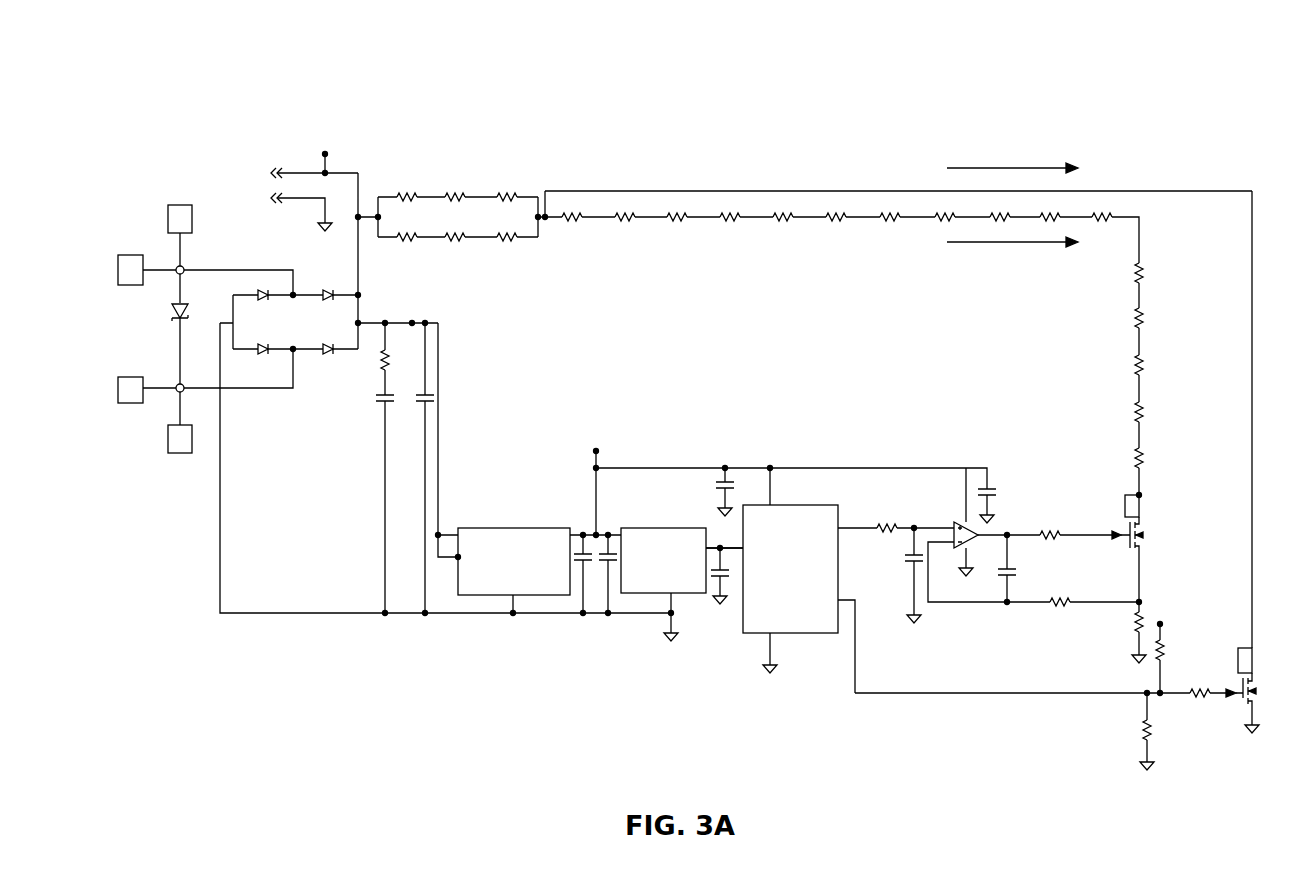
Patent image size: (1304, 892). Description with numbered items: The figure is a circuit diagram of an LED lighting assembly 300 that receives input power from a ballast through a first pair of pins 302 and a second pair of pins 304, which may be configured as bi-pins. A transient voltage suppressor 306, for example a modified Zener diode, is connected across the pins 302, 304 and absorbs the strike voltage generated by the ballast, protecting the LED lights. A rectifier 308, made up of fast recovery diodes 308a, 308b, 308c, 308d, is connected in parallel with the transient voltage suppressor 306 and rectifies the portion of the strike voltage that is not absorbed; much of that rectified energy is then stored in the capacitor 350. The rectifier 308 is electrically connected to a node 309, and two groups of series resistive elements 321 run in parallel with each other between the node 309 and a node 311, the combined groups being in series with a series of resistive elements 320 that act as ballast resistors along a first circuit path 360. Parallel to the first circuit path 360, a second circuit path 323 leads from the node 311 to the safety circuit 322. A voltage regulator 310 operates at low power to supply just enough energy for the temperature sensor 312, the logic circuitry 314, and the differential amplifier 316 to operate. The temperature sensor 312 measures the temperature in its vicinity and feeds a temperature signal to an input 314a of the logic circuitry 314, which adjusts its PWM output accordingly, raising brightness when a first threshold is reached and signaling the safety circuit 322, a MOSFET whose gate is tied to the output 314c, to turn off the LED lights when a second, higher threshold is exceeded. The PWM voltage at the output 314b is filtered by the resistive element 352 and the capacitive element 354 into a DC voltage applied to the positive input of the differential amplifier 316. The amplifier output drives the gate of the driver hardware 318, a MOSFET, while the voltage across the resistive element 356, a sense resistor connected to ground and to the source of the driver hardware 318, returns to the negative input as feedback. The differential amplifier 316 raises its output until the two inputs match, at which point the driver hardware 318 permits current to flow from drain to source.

The LED lighting assembly 300 is at (689, 430).
The first pair of pins 302 is at (131, 255).
The second pair of pins 304 is at (168, 211).
The transient voltage suppressor 306 is at (172, 313).
The rectifier 308 is at (327, 339).
The fast recovery diode 308a is at (262, 291).
The fast recovery diode 308b is at (328, 300).
The fast recovery diode 308c is at (265, 355).
The fast recovery diode 308d is at (306, 360).
The node 309 is at (362, 190).
The voltage regulator 310 is at (508, 528).
The node 311 is at (544, 228).
The temperature sensor 312 is at (668, 528).
The logic circuitry 314 is at (798, 634).
The input of the logic circuitry 314a is at (742, 548).
The output of the logic circuitry 314b is at (850, 528).
The output of the logic circuitry 314c is at (840, 600).
The differential amplifier 316 is at (955, 528).
The driver hardware 318 is at (1148, 531).
The series of resistive elements 320 is at (844, 355).
The two groups of series resistive elements 321 is at (455, 196).
The safety circuit 322 is at (1236, 688).
The second circuit path 323 is at (1012, 166).
The capacitor 350 is at (430, 393).
The resistive element 352 is at (895, 525).
The capacitive element 354 is at (905, 560).
The resistive element 356 is at (1136, 622).
The first circuit path 360 is at (1012, 246).